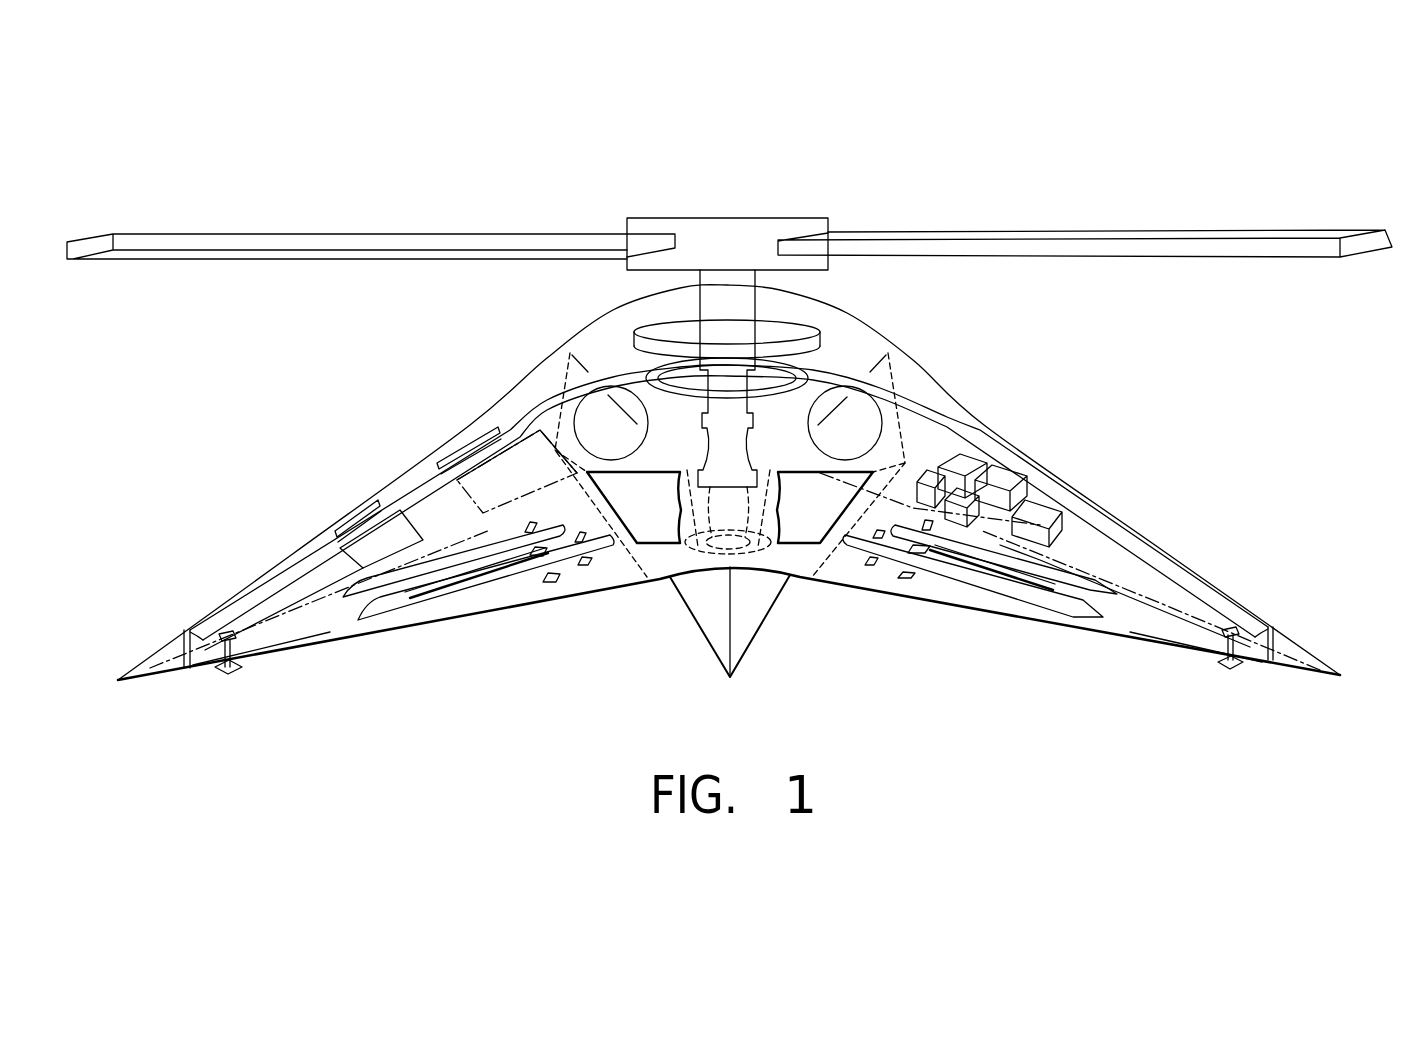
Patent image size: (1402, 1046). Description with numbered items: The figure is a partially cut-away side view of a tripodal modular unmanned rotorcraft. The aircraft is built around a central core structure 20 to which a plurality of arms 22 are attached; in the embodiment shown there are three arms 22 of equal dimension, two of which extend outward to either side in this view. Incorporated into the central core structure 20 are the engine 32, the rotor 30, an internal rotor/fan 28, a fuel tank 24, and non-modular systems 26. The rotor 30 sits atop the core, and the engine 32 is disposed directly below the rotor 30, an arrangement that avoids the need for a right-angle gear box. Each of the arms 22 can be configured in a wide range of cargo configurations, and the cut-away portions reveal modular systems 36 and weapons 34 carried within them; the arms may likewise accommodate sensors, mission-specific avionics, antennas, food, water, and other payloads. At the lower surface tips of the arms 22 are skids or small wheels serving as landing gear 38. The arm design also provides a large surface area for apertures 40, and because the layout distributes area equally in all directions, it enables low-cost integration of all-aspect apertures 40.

The central core structure 20 is at (848, 348).
The arms 22 is at (290, 650).
The fuel tank 24 is at (577, 417).
The non-modular systems 26 is at (798, 578).
The internal rotor/fan 28 is at (647, 327).
The rotor 30 is at (1127, 230).
The engine 32 is at (678, 503).
The weapons 34 is at (983, 593).
The modular systems 36 is at (1007, 470).
The landing gear 38 is at (225, 674).
The apertures 40 is at (448, 452).